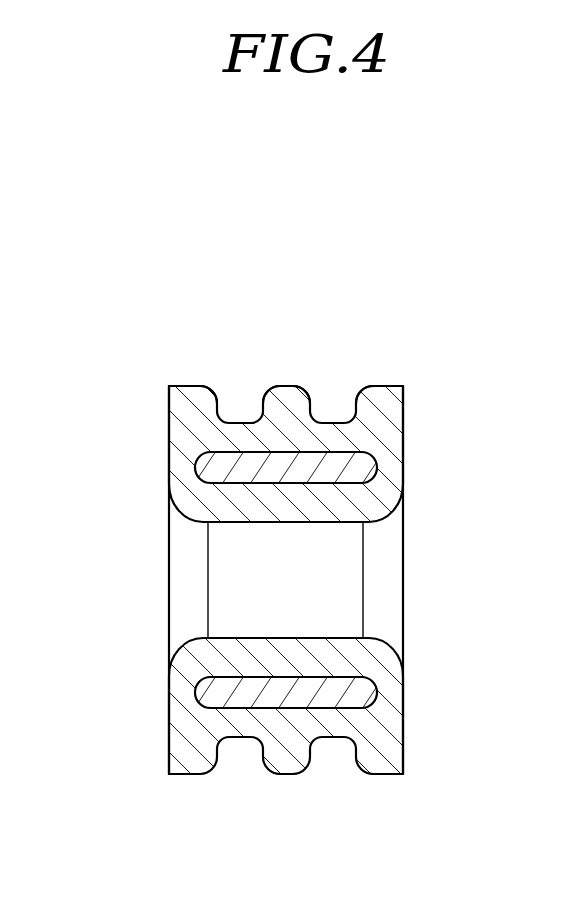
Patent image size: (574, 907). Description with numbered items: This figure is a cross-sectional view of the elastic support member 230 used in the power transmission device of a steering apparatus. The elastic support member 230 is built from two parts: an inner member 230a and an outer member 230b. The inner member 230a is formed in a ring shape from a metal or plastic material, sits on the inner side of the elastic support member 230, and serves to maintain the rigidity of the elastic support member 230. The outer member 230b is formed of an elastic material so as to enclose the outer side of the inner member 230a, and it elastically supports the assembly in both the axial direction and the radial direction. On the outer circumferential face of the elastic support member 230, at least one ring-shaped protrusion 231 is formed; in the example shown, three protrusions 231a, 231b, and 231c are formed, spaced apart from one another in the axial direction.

The elastic support member 230 is at (168, 266).
The inner member 230a is at (212, 465).
The outer member 230b is at (188, 436).
The protrusion 231 is at (383, 323).
The first protrusion 231a is at (188, 400).
The second protrusion 231b is at (380, 405).
The third protrusion 231c is at (283, 400).